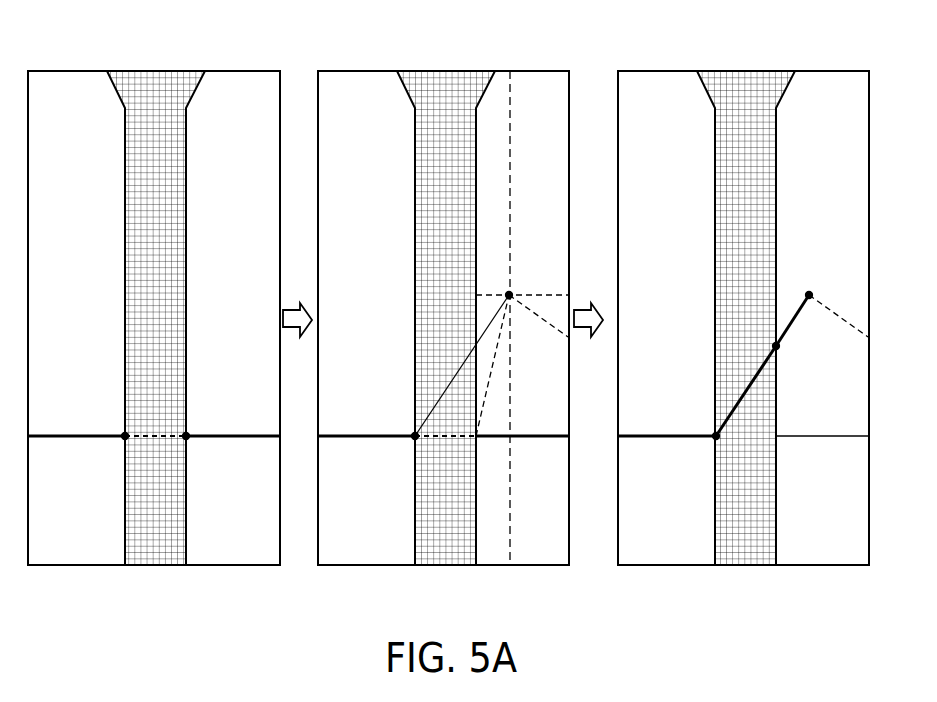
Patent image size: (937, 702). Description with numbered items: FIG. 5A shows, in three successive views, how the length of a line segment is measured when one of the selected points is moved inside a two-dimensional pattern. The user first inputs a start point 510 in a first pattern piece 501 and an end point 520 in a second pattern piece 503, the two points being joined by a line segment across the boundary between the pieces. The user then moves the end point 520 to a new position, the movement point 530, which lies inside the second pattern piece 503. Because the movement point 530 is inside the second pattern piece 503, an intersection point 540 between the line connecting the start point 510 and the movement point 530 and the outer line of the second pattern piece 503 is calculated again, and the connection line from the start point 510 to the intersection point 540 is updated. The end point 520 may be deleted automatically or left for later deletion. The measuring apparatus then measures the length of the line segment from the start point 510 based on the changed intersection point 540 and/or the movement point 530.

The first pattern piece 501 is at (72, 87).
The second pattern piece 503 is at (245, 87).
The start point 510 is at (125, 436).
The end point 520 is at (186, 436).
The movement point 530 is at (509, 295).
The intersection point 540 is at (776, 346).